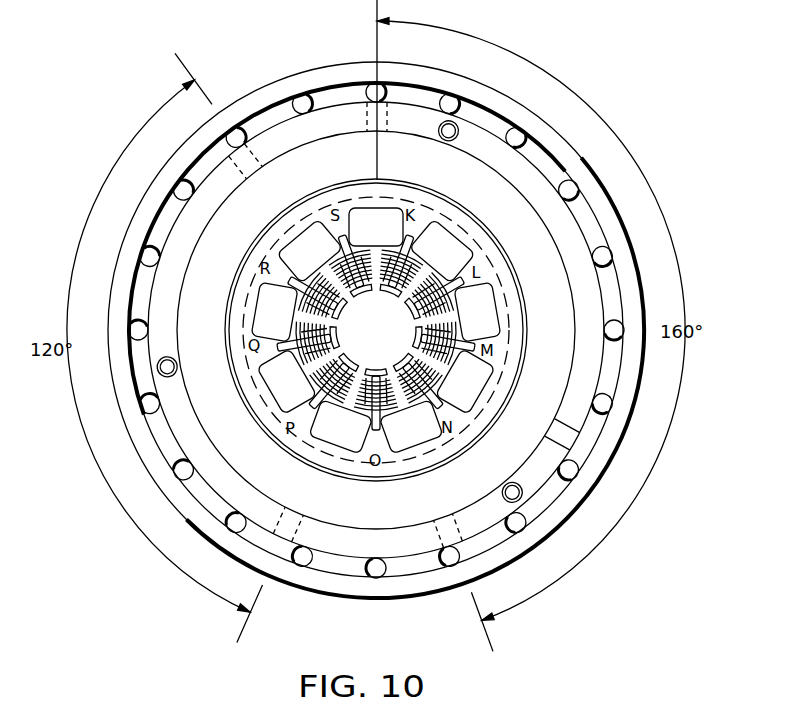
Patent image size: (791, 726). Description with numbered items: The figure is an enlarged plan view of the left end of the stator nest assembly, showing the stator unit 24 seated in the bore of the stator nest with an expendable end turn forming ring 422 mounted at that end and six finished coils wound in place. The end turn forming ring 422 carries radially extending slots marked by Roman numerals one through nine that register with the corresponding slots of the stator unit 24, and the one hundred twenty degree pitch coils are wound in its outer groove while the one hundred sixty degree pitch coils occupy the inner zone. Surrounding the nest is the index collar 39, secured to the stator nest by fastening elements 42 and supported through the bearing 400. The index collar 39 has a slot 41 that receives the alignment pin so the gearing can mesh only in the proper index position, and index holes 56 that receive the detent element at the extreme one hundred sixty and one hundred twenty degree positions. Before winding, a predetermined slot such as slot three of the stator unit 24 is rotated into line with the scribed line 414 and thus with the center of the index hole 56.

The bearing 400 is at (273, 84).
The index hole 56 is at (370, 114).
The index collar 39 is at (533, 168).
The scribed line 414 is at (376, 158).
The fastening elements 42 is at (449, 141).
The stator unit 24 is at (462, 246).
The end turn forming ring 422 is at (500, 290).
The slot 41 is at (531, 428).